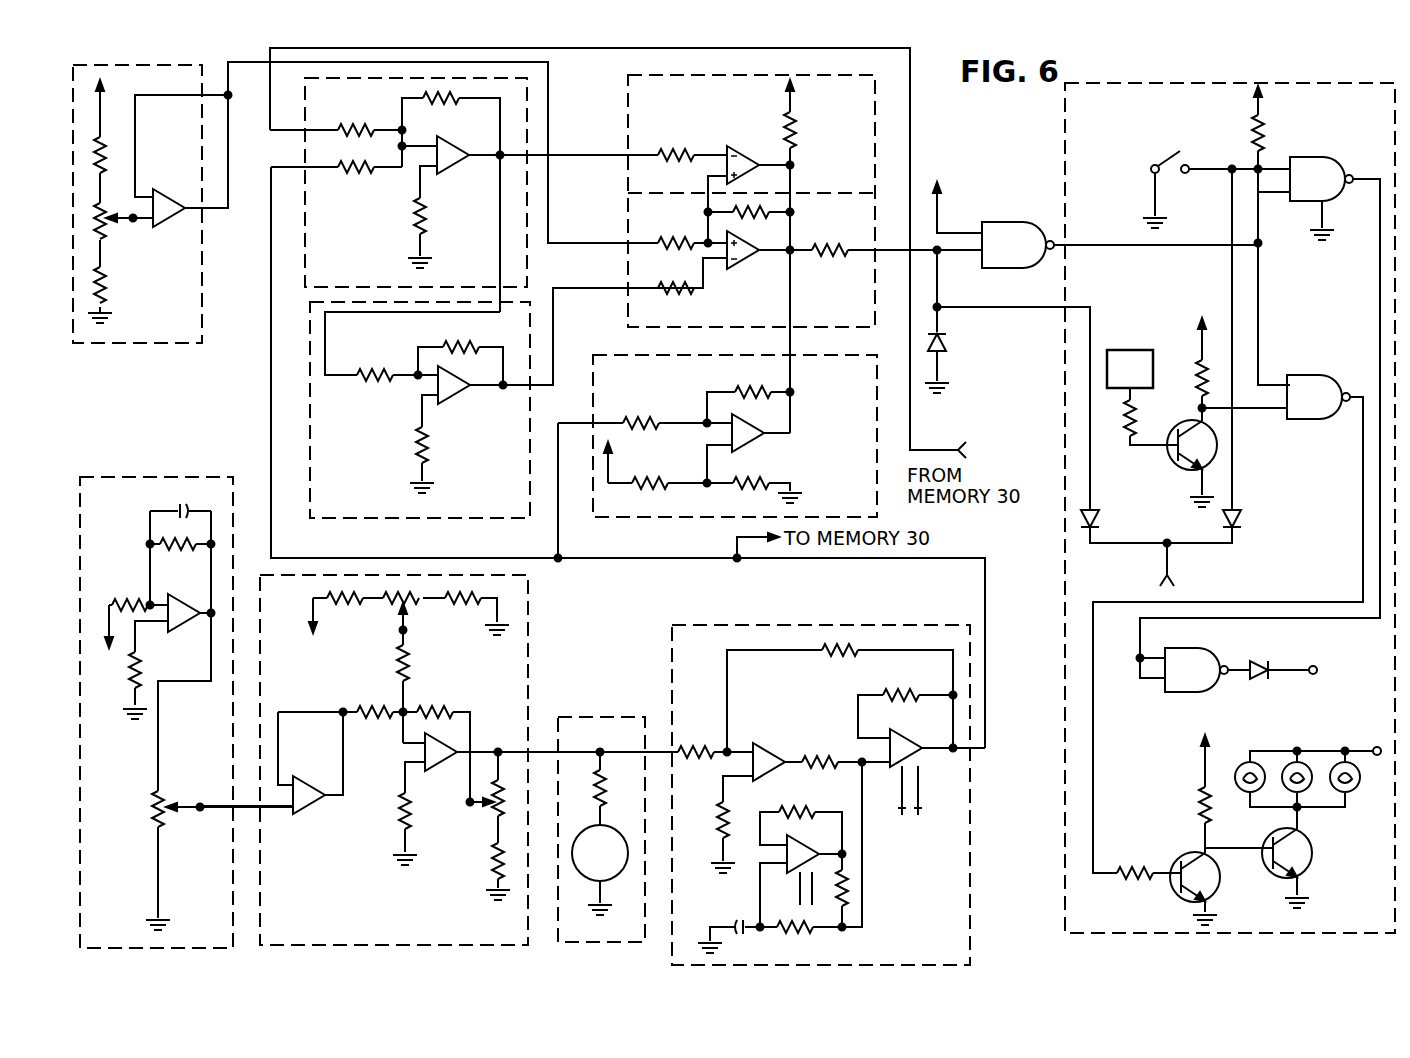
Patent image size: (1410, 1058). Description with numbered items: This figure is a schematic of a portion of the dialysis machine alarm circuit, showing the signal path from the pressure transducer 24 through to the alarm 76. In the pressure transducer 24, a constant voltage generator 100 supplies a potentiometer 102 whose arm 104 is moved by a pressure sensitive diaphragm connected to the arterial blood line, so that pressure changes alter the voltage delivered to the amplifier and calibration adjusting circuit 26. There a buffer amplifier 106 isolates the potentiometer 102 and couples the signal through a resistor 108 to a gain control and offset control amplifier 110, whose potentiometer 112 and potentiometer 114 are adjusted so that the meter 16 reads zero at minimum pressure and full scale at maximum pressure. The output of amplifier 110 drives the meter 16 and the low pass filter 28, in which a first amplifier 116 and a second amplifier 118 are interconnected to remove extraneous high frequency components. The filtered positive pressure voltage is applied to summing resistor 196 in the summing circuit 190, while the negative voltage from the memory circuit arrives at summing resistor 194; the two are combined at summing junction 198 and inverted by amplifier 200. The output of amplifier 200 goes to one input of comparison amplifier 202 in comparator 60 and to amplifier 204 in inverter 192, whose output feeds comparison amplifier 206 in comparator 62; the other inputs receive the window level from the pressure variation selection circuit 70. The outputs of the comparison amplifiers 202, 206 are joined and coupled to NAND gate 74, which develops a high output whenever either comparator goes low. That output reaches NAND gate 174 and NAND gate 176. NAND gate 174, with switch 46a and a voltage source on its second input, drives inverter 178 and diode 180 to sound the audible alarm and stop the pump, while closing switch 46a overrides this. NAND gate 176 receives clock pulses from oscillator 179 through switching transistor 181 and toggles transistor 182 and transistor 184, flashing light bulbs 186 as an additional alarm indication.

The meter 16 is at (568, 717).
The pressure transducer 24 is at (135, 477).
The amplifier and calibration adjusting circuit 26 is at (528, 598).
The low pass filter 28 is at (722, 620).
The comparator 60 is at (765, 241).
The comparator 62 is at (877, 327).
The pressure variation selection circuit 70 is at (150, 345).
The NAND gate 74 is at (998, 222).
The alarm 76 is at (1064, 141).
The switch 46a is at (1168, 160).
The constant voltage generator 100 is at (185, 625).
The potentiometer 102 is at (155, 823).
The arm 104 is at (195, 815).
The buffer amplifier 106 is at (315, 805).
The resistor 108 is at (378, 718).
The gain control and offset control amplifier 110 is at (443, 770).
The potentiometer 112 is at (408, 608).
The potentiometer 114 is at (485, 815).
The first amplifier 116 is at (765, 757).
The second amplifier 118 is at (895, 737).
The NAND gate 174 is at (1312, 157).
The NAND gate 176 is at (1300, 375).
The inverter 178 is at (1185, 650).
The oscillator 179 is at (1122, 350).
The diode 180 is at (1262, 660).
The switching transistor 181 is at (1168, 470).
The transistor 182 is at (1222, 888).
The transistor 184 is at (1313, 857).
The light bulbs 186 is at (1355, 785).
The summing circuit 190 is at (438, 195).
The inverter 192 is at (502, 426).
The summing resistor 194 is at (339, 130).
The summing resistor 196 is at (372, 171).
The summing junction 198 is at (408, 144).
The amplifier 200 is at (460, 168).
The comparison amplifier 202 is at (733, 150).
The amplifier 204 is at (455, 400).
The comparison amplifier 206 is at (750, 265).